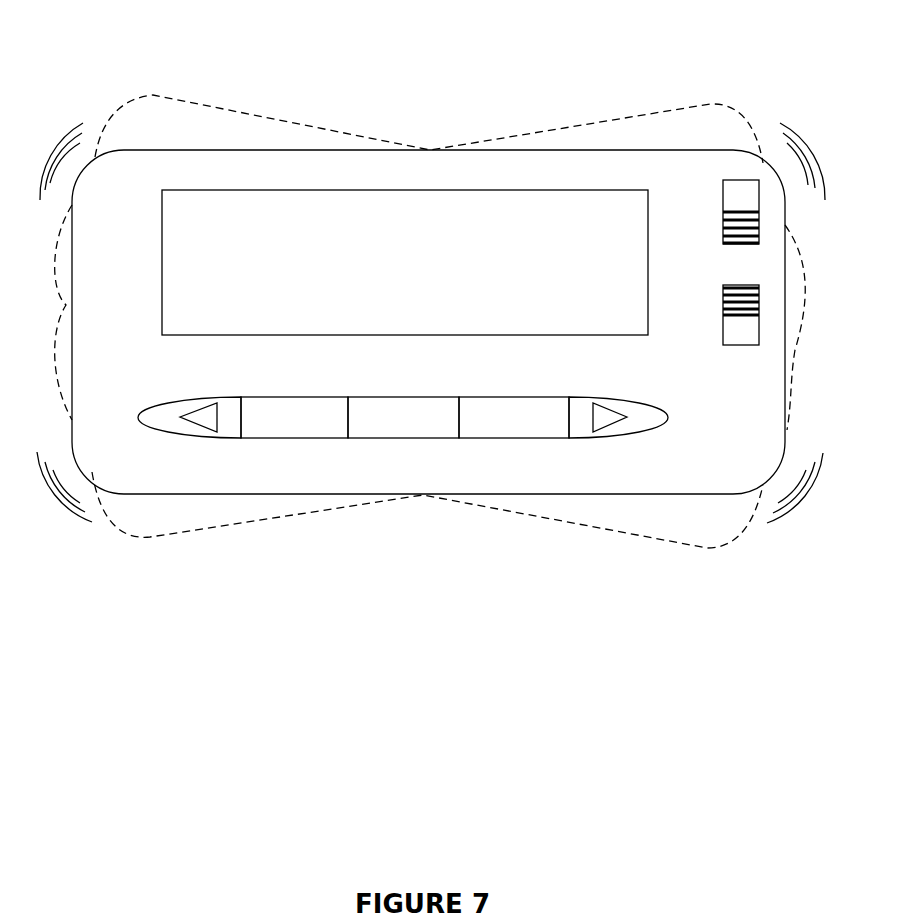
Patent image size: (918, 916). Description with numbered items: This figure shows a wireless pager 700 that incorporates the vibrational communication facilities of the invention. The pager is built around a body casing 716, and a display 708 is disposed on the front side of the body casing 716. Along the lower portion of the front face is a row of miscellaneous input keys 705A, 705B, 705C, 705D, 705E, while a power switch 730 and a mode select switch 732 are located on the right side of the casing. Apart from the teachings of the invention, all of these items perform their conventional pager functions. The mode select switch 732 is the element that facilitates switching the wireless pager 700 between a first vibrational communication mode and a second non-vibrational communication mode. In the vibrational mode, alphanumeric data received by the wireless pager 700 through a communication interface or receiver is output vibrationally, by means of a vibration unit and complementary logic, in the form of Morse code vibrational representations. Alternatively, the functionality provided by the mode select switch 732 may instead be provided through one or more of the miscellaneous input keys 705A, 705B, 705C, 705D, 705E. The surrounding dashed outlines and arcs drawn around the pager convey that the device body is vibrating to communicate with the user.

The wireless pager 700 is at (416, 88).
The body casing 716 is at (127, 216).
The display 708 is at (163, 305).
The power switch 730 is at (728, 193).
The mode select switch 732 is at (728, 327).
The miscellaneous input key 705A is at (165, 425).
The miscellaneous input key 705B is at (308, 425).
The miscellaneous input key 705C is at (405, 425).
The miscellaneous input key 705D is at (512, 425).
The miscellaneous input key 705E is at (647, 425).